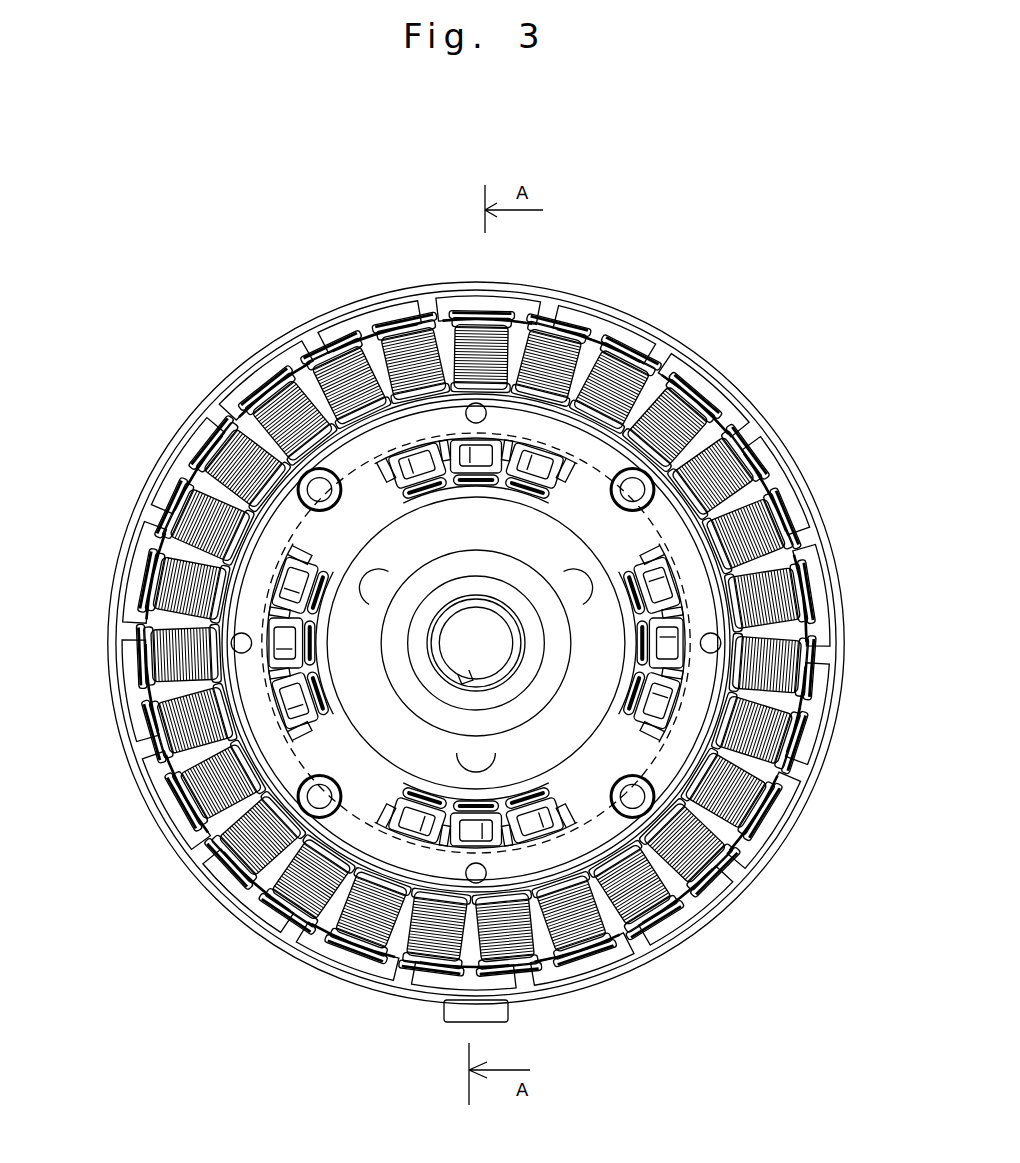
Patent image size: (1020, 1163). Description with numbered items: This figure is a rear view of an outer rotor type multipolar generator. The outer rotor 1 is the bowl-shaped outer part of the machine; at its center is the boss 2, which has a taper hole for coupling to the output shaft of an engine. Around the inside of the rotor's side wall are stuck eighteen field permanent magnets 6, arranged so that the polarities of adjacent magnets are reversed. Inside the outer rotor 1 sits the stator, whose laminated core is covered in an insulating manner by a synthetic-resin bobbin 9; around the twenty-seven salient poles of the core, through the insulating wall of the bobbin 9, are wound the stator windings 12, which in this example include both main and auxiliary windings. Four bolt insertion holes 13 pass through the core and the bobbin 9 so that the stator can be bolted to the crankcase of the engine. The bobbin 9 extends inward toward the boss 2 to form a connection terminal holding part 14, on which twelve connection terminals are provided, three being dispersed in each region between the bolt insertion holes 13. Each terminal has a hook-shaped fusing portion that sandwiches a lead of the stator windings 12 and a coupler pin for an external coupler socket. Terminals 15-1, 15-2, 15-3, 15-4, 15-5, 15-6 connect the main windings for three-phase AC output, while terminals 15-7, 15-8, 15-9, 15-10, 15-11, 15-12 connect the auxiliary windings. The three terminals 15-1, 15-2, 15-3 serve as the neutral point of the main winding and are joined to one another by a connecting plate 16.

The outer rotor 1 is at (754, 377).
The boss 2 is at (524, 712).
The field permanent magnets 6 is at (700, 378).
The bobbin 9 is at (398, 427).
The stator windings 12 is at (713, 482).
The bolt insertion holes 13 is at (318, 470).
The connection terminal holding part 14 is at (250, 663).
The connection terminal 15-1 is at (410, 470).
The connection terminal 15-2 is at (490, 470).
The connection terminal 15-3 is at (545, 472).
The connection terminal 15-4 is at (627, 590).
The connection terminal 15-5 is at (627, 647).
The connection terminal 15-6 is at (627, 693).
The connection terminal 15-7 is at (533, 830).
The connection terminal 15-8 is at (473, 838).
The connection terminal 15-9 is at (413, 827).
The connection terminal 15-10 is at (322, 690).
The connection terminal 15-11 is at (312, 640).
The connection terminal 15-12 is at (325, 575).
The connecting plate 16 is at (500, 490).